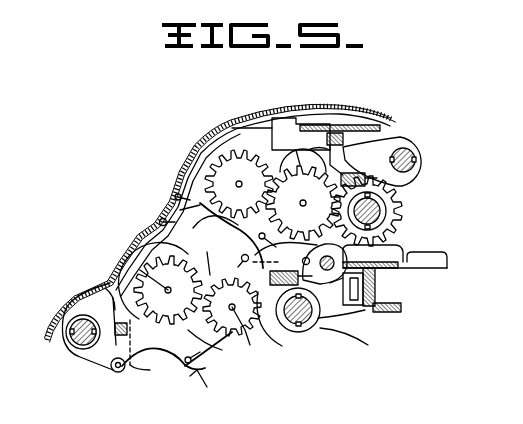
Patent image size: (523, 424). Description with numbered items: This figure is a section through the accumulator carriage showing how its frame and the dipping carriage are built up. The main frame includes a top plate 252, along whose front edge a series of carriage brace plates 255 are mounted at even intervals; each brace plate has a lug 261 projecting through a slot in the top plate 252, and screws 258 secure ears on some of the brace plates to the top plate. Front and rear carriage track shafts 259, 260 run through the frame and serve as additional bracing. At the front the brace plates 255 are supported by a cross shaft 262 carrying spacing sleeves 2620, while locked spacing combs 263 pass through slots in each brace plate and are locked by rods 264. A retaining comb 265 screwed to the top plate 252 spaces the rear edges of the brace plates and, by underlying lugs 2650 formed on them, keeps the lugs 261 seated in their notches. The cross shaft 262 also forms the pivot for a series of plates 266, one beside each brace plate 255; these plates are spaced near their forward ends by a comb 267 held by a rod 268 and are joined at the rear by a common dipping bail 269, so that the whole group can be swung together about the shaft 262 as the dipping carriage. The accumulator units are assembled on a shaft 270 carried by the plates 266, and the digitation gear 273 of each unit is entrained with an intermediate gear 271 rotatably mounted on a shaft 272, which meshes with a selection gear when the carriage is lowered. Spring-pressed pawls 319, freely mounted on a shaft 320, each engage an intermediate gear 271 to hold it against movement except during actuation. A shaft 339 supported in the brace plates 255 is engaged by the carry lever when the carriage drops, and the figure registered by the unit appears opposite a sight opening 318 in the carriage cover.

The top plate 252 is at (400, 127).
The carriage brace plate 255 is at (150, 232).
The screw 258 is at (178, 192).
The front carriage track shaft 259 is at (72, 348).
The rear carriage track shaft 260 is at (413, 168).
The lug 261 is at (283, 127).
The cross shaft 262 is at (113, 369).
The spacing comb 263 is at (80, 300).
The rod 264 is at (95, 308).
The retaining comb 265 is at (405, 131).
The plate 266 is at (158, 345).
The comb 267 is at (205, 362).
The rod 268 is at (200, 372).
The dipping bail 269 is at (402, 306).
The shaft 270 is at (140, 272).
The intermediate gear 271 is at (244, 336).
The shaft 272 is at (282, 330).
The gear 273 is at (117, 260).
The sight opening 318 is at (127, 243).
The pawl 319 is at (183, 167).
The shaft 320 is at (327, 332).
The shaft 339 is at (305, 334).
The spacing sleeve 2620 is at (129, 367).
The lug 2650 is at (334, 133).